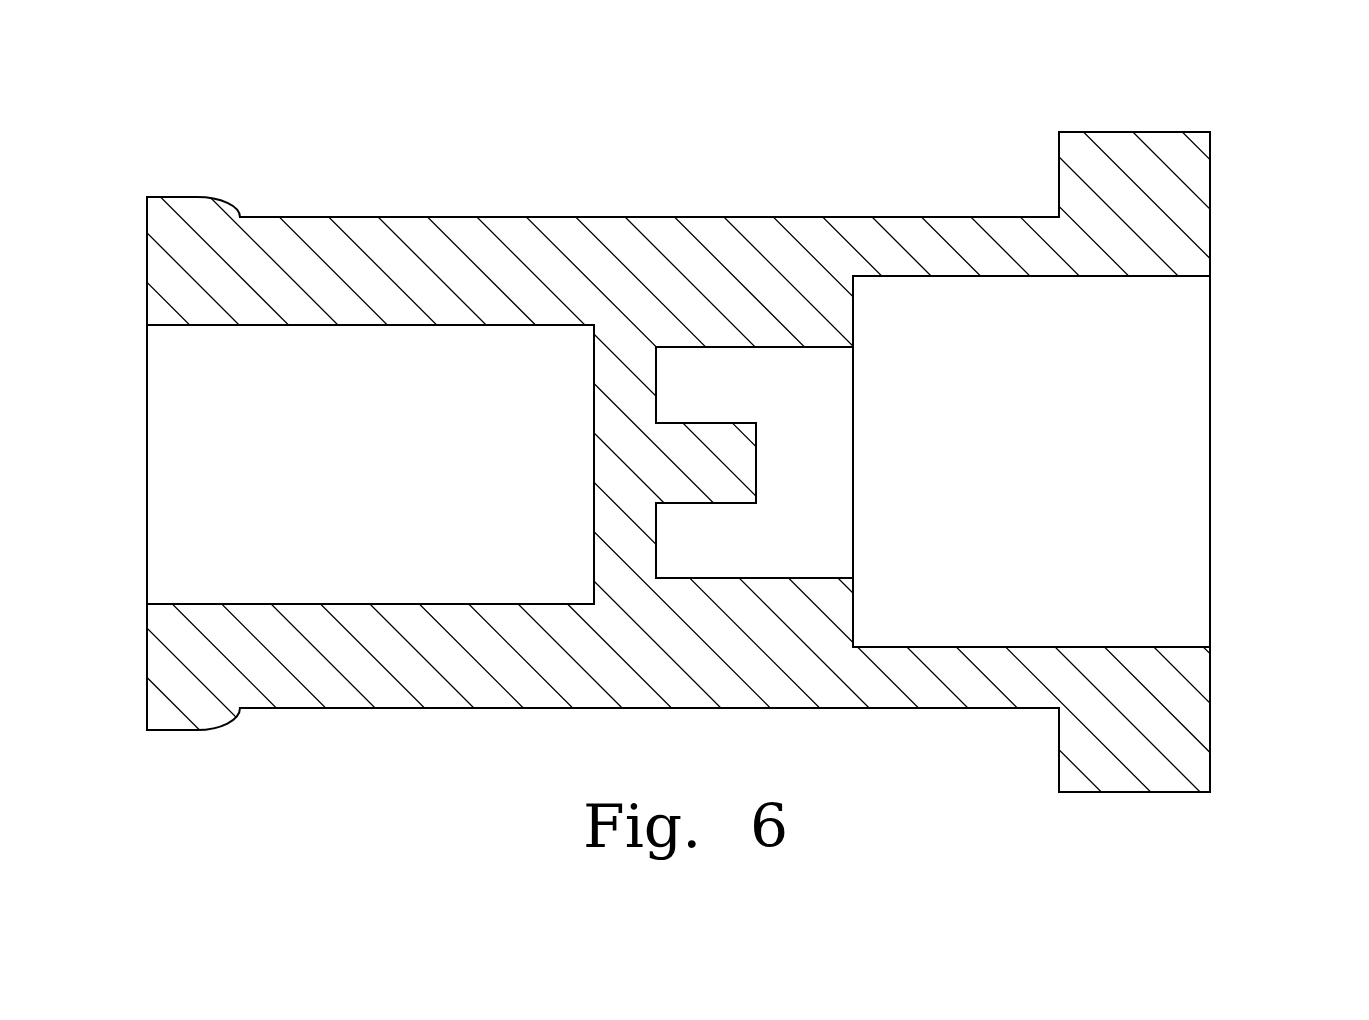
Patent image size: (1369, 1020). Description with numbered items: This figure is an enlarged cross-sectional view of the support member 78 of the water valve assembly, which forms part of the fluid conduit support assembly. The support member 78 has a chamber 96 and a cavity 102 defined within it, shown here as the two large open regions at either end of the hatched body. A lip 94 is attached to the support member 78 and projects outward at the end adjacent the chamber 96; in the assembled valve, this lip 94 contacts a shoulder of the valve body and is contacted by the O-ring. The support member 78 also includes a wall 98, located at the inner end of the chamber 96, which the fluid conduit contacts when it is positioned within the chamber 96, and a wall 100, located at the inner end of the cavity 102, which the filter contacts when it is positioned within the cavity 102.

The support member 78 is at (684, 533).
The lip 94 is at (1125, 143).
The chamber 96 is at (1135, 647).
The wall 98 is at (853, 315).
The wall 100 is at (594, 553).
The cavity 102 is at (298, 603).